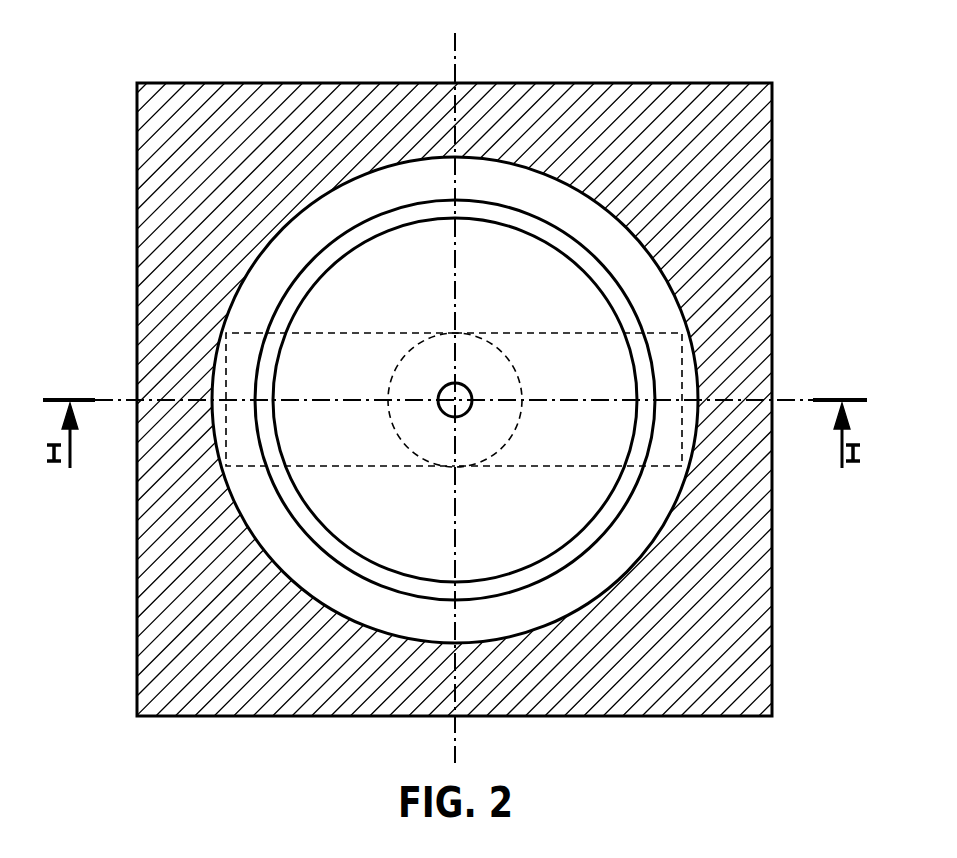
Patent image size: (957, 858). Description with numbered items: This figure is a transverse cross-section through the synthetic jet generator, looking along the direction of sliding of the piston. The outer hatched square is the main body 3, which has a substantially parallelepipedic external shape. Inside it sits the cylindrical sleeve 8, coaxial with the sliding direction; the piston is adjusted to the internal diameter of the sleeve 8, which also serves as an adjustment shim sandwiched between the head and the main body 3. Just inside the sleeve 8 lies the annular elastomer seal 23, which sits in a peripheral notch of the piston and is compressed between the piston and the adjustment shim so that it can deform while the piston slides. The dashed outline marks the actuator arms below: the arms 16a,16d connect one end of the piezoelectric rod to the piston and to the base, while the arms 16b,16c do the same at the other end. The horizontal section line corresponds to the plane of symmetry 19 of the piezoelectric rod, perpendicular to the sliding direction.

The main body 3 is at (750, 155).
The cylindrical sleeve 8 is at (563, 203).
The annular elastomer seal 23 is at (498, 217).
The plane of symmetry 19 is at (803, 397).
The arms 16a,16d is at (337, 442).
The arms 16b,16c is at (573, 442).